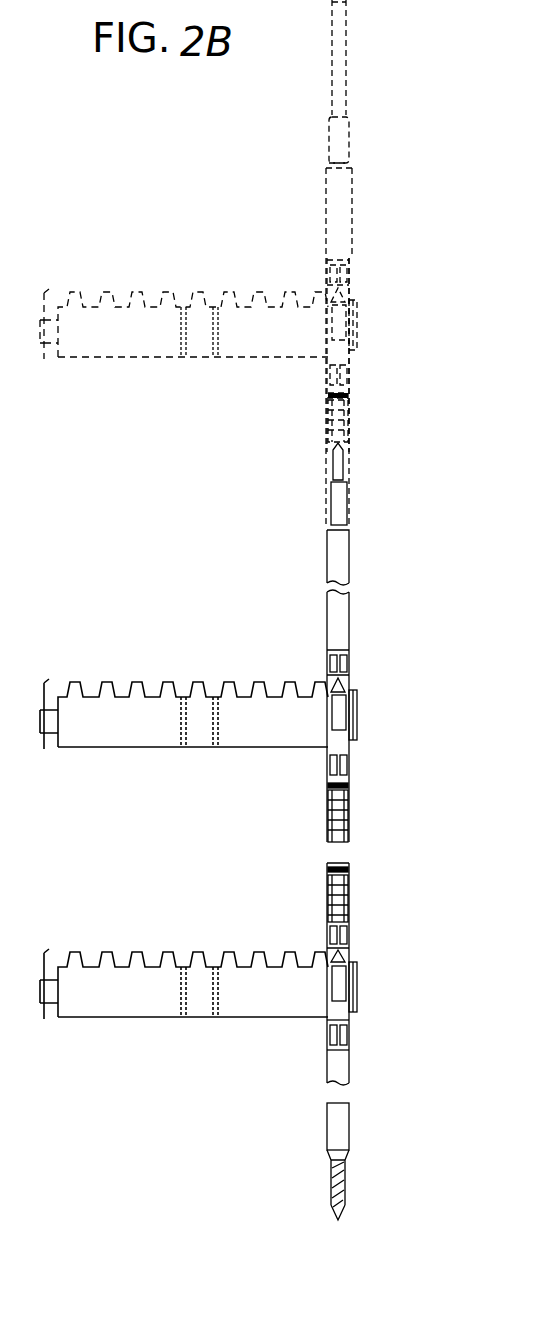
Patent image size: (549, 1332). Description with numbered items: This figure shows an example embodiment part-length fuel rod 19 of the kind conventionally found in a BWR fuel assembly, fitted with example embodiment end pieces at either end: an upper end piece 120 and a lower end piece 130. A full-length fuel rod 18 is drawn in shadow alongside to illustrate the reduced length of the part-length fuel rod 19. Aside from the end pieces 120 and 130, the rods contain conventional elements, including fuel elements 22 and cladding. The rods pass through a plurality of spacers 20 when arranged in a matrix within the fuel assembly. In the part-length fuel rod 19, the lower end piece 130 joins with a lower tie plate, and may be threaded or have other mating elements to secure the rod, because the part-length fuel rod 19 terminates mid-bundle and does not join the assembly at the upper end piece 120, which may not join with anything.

The full-length fuel rod 18 is at (352, 228).
The part-length fuel rod 19 is at (352, 621).
The spacer 20 is at (142, 336).
The fuel element 22 is at (351, 408).
The upper end piece 120 is at (330, 490).
The lower end piece 130 is at (330, 1186).